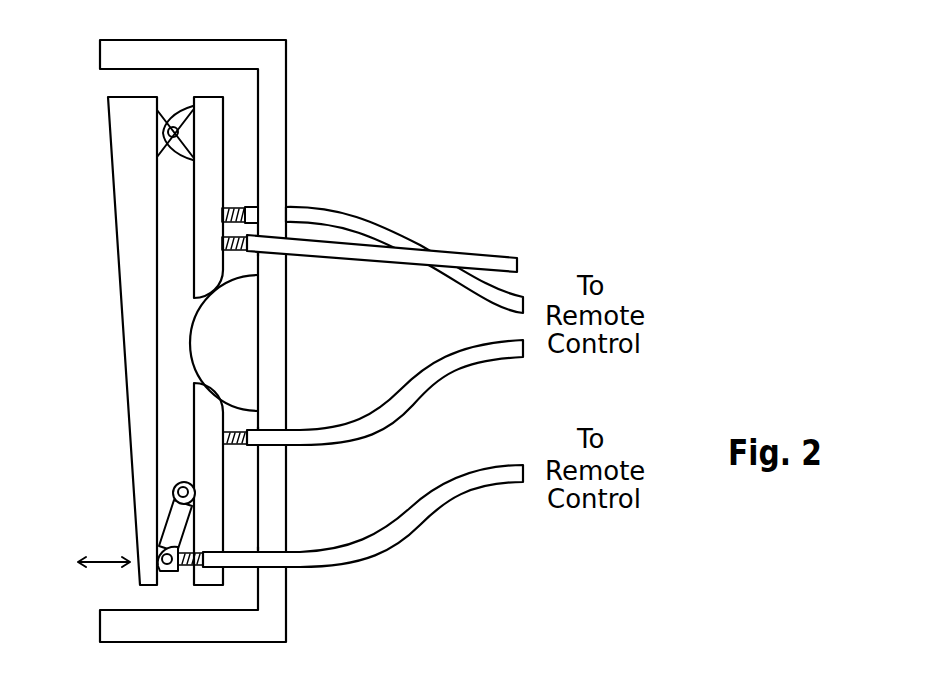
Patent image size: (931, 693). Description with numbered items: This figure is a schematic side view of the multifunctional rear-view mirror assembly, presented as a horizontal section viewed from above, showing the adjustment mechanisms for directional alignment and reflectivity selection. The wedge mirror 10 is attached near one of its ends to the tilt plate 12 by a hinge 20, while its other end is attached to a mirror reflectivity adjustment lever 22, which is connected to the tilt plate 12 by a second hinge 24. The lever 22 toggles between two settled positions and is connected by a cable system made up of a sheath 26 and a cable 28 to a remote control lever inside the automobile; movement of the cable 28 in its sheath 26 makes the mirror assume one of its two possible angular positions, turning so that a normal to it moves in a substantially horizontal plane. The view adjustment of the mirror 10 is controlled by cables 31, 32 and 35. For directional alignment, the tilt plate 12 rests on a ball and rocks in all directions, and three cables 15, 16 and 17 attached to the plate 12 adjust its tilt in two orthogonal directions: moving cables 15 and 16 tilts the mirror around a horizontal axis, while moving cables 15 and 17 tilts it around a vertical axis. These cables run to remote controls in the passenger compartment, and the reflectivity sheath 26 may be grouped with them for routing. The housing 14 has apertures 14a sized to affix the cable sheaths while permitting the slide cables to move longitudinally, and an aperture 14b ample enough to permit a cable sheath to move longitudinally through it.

The wedge mirror 10 is at (140, 317).
The tilt plate 12 is at (210, 110).
The housing 14 is at (277, 597).
The apertures 14a is at (277, 253).
The aperture 14b is at (270, 547).
The cable 15 is at (457, 258).
The cable 16 is at (360, 212).
The cable 17 is at (390, 410).
The hinge 20 is at (183, 138).
The mirror reflectivity adjustment lever 22 is at (177, 527).
The second hinge 24 is at (180, 482).
The sheath 26 is at (450, 500).
The cable 28 is at (183, 570).
The cable 31 is at (240, 252).
The cable 32 is at (233, 207).
The cable 35 is at (233, 445).